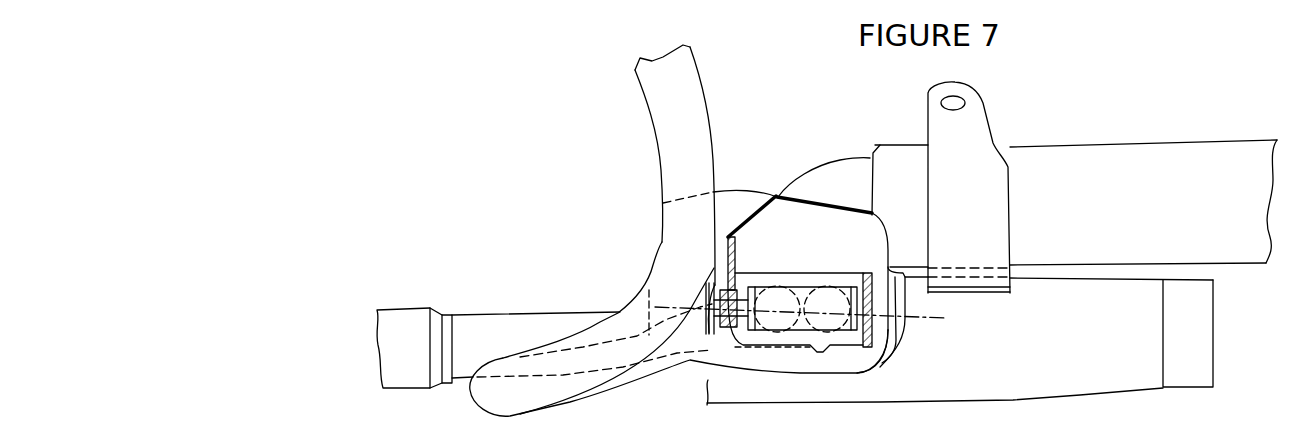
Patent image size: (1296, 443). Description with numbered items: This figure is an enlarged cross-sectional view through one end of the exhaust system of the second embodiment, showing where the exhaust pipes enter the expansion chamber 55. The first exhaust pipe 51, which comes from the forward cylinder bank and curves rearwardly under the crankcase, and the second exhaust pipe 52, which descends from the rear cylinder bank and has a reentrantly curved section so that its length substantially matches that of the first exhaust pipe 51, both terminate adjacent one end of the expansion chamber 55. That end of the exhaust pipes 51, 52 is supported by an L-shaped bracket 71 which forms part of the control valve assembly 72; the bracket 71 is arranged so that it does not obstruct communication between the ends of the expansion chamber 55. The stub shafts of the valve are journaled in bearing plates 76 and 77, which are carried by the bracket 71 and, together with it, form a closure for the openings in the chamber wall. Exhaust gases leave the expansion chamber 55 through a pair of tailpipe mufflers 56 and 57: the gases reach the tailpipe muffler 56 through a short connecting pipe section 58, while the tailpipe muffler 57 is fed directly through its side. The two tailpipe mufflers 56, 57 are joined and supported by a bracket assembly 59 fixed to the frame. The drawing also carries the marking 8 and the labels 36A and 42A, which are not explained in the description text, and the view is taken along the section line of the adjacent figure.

The first exhaust pipe 51 is at (485, 313).
The second exhaust pipe 52 is at (656, 108).
The expansion chamber 55 is at (752, 207).
The short connecting pipe section 58 is at (840, 160).
The housing lobe 36A is at (890, 267).
The bracket assembly 59 is at (988, 117).
The tailpipe muffler 56 is at (1197, 127).
The tailpipe muffler 57 is at (1130, 392).
The L-shaped bracket 71 is at (794, 273).
The control valve assembly 72 is at (813, 266).
The bearing plate 77 is at (887, 327).
The bearing plate 76 is at (712, 330).
The lever 42A is at (700, 327).
The section line 8- 8 is at (663, 285).